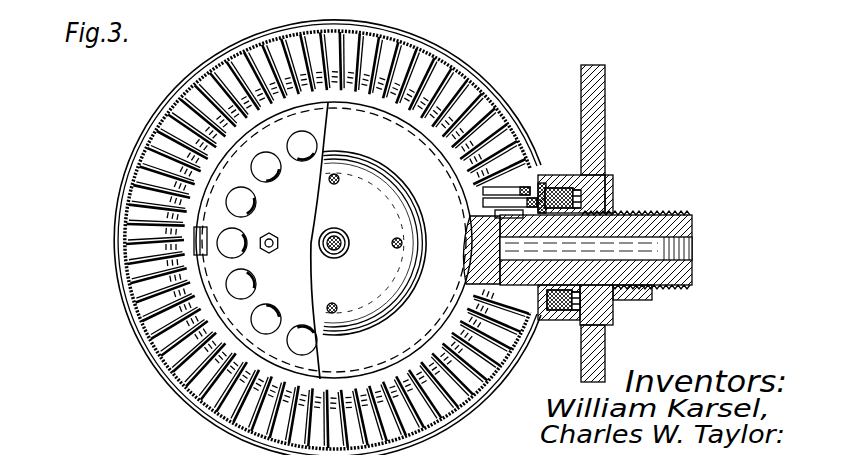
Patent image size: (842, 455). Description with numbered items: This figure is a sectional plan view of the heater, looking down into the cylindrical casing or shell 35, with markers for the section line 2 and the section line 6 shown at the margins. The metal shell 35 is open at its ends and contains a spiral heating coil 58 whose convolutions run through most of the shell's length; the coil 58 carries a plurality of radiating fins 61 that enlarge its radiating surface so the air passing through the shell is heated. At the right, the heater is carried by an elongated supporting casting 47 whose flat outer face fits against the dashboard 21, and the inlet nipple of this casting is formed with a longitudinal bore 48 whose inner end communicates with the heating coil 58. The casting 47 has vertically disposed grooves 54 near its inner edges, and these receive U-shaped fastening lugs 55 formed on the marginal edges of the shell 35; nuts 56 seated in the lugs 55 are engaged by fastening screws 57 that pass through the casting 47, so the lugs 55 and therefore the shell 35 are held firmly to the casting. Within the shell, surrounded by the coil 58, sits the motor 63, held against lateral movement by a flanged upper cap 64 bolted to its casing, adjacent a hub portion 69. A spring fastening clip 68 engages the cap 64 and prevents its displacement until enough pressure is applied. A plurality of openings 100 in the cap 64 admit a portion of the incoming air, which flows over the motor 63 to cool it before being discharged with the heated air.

The section line 2- 2 is at (85, 223).
The section line 6- 6 is at (272, 8).
The dashboard 21 is at (605, 84).
The cylindrical casing or shell 35 is at (417, 53).
The supporting casting 47 is at (568, 175).
The longitudinal bore 48 is at (658, 218).
The vertically disposed grooves 54 is at (580, 193).
The fastening lugs 55 is at (553, 188).
The nuts 56 is at (614, 205).
The fastening screws 57 is at (613, 177).
The spiral heating coil 58 is at (122, 290).
The radiating fins 61 is at (462, 71).
The motor 63 is at (349, 237).
The upper cap 64 is at (298, 282).
The spring fastening clip 68 is at (208, 228).
The hub 69 is at (472, 223).
The openings 100 is at (302, 162).